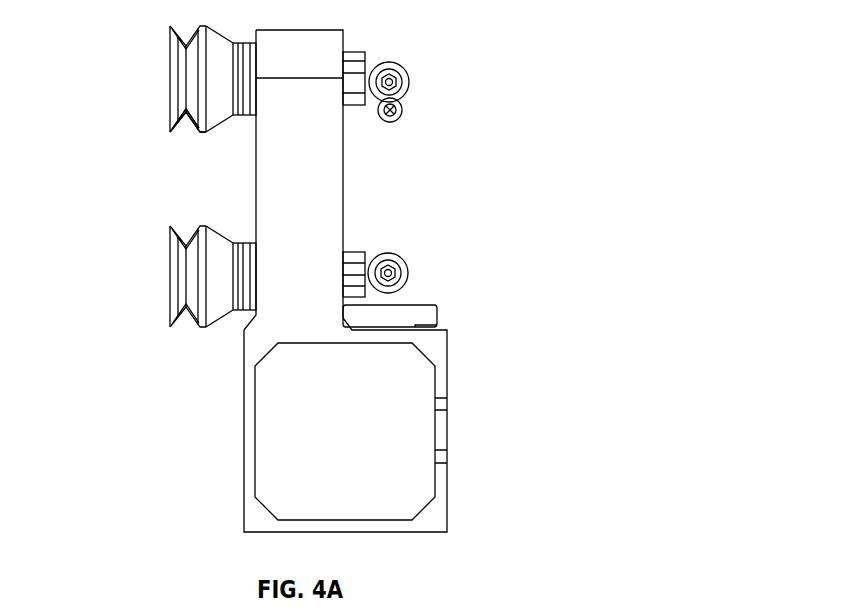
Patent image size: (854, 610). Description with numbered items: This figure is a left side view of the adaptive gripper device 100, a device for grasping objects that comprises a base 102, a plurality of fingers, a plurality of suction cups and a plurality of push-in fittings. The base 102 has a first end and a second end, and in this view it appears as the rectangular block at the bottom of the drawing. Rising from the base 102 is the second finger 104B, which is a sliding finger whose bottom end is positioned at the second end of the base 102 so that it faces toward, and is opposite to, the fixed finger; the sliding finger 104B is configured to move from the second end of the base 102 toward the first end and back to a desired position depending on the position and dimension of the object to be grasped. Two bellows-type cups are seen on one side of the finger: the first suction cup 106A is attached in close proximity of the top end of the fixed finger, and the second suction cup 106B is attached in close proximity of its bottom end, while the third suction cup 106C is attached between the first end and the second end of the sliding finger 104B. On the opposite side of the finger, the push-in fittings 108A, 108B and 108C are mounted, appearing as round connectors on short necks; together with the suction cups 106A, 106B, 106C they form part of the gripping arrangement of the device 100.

The adaptive gripper device 100 is at (433, 540).
The base 102 is at (440, 431).
The second finger 104B is at (268, 201).
The first suction cup 106A is at (172, 27).
The second suction cup 106B is at (198, 278).
The third suction cup 106C is at (183, 130).
The push-in fitting 108A is at (403, 112).
The push-in fitting 108B is at (408, 271).
The push-in fitting 108C is at (409, 72).